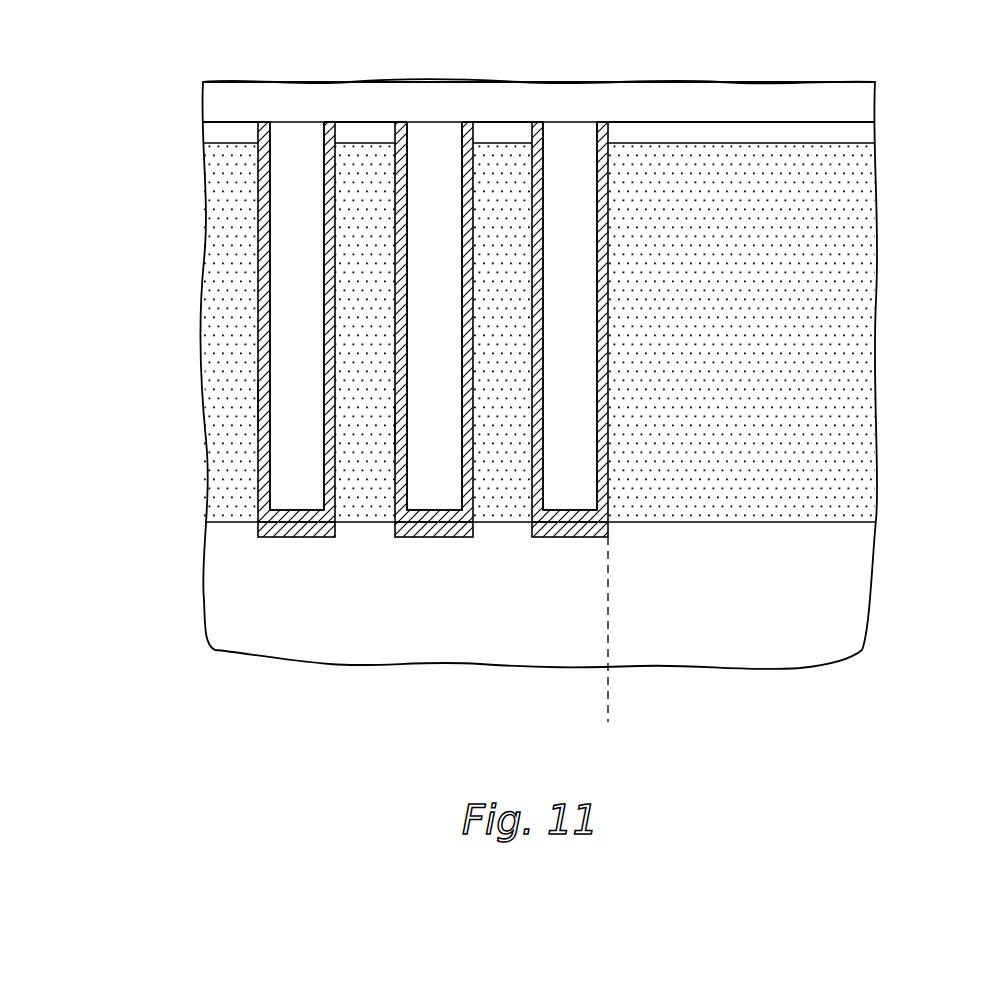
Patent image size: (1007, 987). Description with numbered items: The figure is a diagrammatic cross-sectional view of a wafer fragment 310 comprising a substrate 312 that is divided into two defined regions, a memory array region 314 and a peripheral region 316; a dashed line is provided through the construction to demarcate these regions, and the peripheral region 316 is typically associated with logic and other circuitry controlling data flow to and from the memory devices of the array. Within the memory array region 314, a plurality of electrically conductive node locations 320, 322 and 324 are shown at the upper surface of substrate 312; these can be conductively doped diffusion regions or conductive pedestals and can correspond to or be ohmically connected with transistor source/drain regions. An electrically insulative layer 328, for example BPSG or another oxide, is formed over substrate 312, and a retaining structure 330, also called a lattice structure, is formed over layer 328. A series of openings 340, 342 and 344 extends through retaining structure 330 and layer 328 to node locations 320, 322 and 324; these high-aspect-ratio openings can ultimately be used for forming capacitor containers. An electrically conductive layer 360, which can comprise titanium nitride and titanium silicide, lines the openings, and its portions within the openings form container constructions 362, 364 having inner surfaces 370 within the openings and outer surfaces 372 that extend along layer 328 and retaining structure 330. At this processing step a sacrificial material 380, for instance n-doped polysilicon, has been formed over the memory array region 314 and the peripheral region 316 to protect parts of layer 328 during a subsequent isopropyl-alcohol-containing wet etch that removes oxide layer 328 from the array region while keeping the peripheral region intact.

The wafer fragment 310 is at (145, 136).
The substrate 312 is at (824, 622).
The memory array region 314 is at (209, 700).
The peripheral region 316 is at (609, 700).
The node location 320 is at (292, 540).
The node location 322 is at (433, 540).
The node location 324 is at (570, 540).
The layer 328 is at (254, 363).
The retaining structure 330 is at (227, 138).
The opening 340 is at (295, 117).
The opening 342 is at (432, 118).
The opening 344 is at (570, 118).
The electrically conductive layer 360 is at (264, 160).
The container construction 362 is at (256, 405).
The container construction 364 is at (393, 430).
The inner surface 370 is at (271, 278).
The outer surface 372 is at (256, 230).
The sacrificial material 380 is at (834, 103).